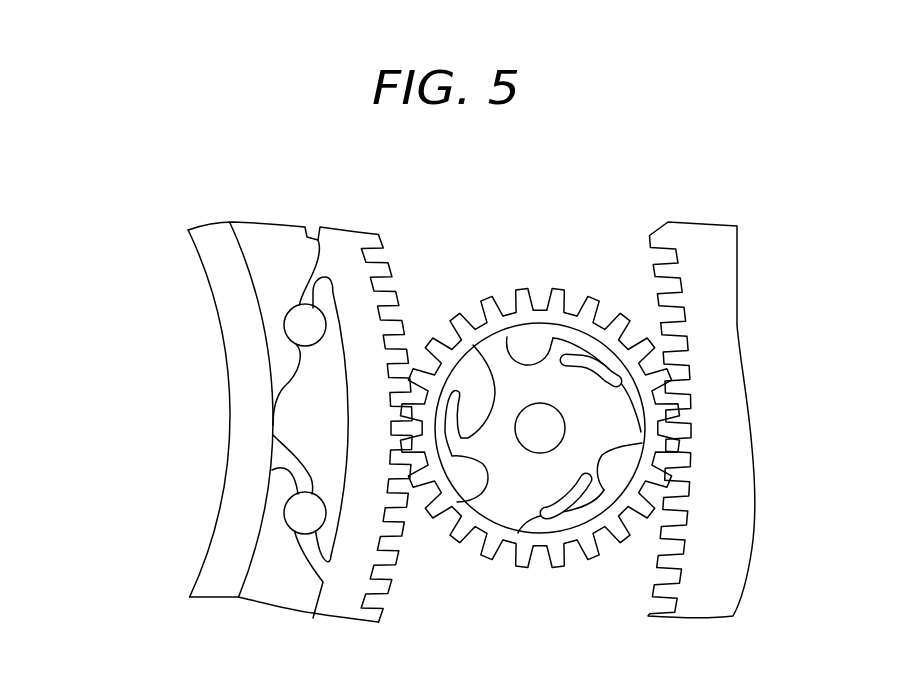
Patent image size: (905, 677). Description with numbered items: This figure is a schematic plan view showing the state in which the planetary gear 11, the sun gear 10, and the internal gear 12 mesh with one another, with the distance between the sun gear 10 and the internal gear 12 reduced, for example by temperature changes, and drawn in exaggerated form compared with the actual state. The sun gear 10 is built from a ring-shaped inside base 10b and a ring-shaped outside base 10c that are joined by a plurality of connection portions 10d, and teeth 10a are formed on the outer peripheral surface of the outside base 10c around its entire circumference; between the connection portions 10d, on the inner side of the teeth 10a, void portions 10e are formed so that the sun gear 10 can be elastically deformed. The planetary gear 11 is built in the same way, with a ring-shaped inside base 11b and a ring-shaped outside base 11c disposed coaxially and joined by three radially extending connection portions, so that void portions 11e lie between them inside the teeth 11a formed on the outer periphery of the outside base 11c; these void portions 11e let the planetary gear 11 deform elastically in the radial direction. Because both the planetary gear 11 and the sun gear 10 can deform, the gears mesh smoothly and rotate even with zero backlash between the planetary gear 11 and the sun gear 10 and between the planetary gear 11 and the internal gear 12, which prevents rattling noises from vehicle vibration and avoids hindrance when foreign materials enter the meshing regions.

The sun gear 10 is at (365, 221).
The teeth 10a is at (384, 235).
The inside base 10b is at (188, 231).
The outside base 10c is at (303, 232).
The connection portions 10d is at (290, 368).
The void portions 10e is at (265, 273).
The planetary gear 11 is at (542, 280).
The teeth 11a is at (486, 298).
The inside base 11b is at (522, 490).
The outside base 11c is at (562, 548).
The void portions 11e is at (455, 378).
The internal gear 12 is at (653, 220).